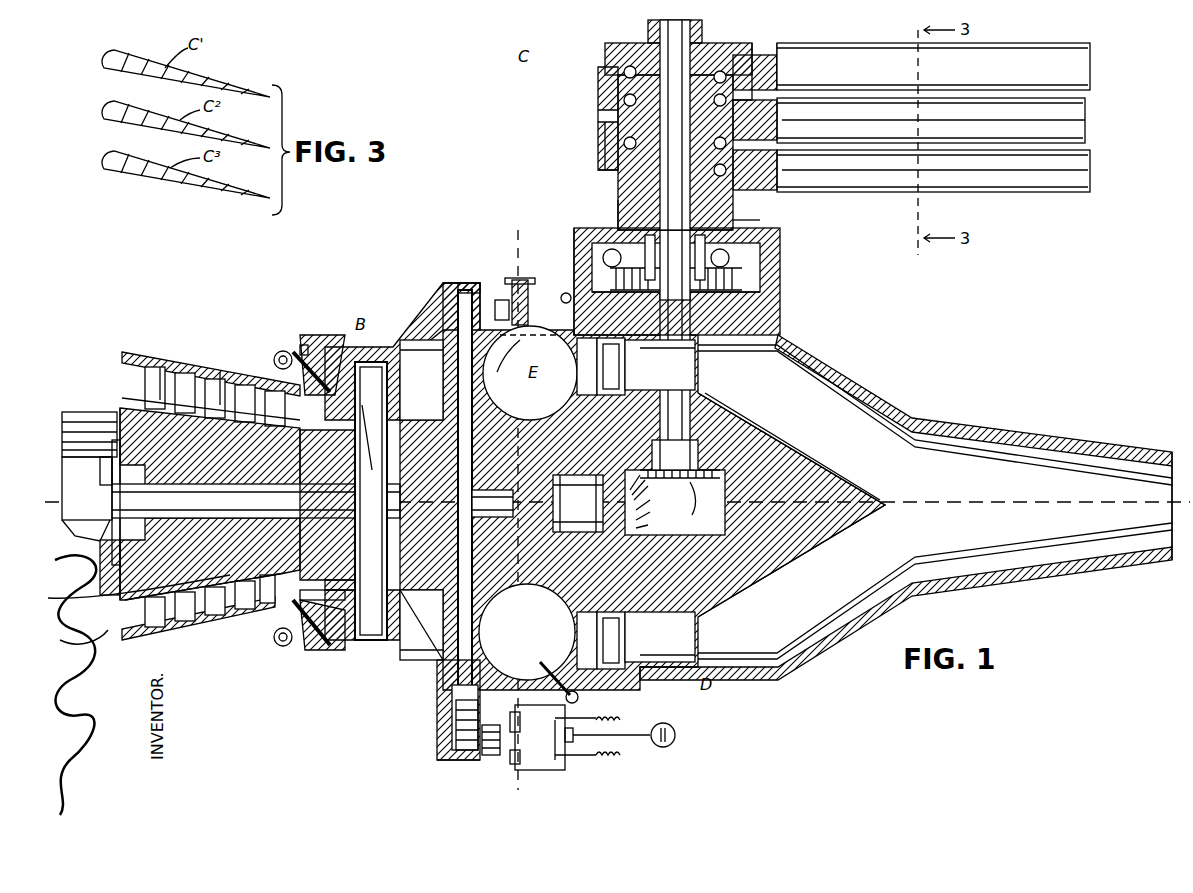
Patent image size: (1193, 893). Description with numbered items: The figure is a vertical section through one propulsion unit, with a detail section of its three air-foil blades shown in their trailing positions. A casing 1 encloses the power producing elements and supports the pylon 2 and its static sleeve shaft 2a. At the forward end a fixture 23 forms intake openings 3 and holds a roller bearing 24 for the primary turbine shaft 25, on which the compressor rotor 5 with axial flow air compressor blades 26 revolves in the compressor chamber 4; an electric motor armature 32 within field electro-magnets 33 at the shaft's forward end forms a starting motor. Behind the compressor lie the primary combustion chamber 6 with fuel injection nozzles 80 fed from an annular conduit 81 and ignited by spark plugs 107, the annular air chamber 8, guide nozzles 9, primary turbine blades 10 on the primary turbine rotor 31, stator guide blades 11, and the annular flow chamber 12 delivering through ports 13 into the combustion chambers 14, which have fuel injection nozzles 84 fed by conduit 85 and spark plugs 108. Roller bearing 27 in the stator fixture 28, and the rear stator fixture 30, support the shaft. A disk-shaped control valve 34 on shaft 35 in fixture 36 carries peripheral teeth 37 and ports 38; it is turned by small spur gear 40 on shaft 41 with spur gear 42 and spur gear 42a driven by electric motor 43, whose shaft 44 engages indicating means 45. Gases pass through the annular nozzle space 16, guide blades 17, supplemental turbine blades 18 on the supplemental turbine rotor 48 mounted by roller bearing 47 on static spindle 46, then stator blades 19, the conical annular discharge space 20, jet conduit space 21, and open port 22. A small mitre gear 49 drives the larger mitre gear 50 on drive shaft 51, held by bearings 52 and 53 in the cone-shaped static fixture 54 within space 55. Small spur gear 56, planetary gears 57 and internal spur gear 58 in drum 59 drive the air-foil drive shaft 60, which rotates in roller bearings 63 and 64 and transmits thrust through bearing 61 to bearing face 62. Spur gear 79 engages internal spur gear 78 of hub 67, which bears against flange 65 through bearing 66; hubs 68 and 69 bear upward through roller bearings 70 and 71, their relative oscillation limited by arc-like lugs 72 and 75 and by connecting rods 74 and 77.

The casing 1 is at (130, 355).
The pylon 2 is at (52, 490).
The sleeve shaft 2a is at (618, 198).
The intake openings 3 is at (120, 350).
The compressor chamber 4 is at (200, 365).
The compressor rotor 5 is at (222, 380).
The primary combustion chamber 6 is at (296, 648).
The annular air chamber 8 is at (330, 625).
The guide nozzles or stator blades 9 is at (370, 640).
The primary turbine blades 10 is at (371, 501).
The stator guide blades 11 is at (422, 500).
The annular flow chamber 12 is at (421, 500).
The ports 13 is at (455, 360).
The combustion chambers 14 is at (528, 503).
The annular nozzle space 16 is at (185, 368).
The guide blades 17 is at (578, 503).
The supplemental turbine blades 18 is at (520, 503).
The reaction guide blades or stator blades 19 is at (640, 640).
The conical annular discharge space 20 is at (906, 507).
The jet conduit space 21 is at (1008, 488).
The open port 22 is at (1172, 512).
The fixture 23 is at (128, 420).
The roller bearing 24 is at (80, 540).
The primary turbine shaft 25 is at (87, 499).
The axial flow air compressor blades 26 is at (160, 365).
The roller bearing 27 is at (260, 595).
The stator fixture 28 is at (338, 360).
The stator fixture 30 is at (430, 675).
The primary turbine rotor 31 is at (370, 429).
The electric motor armature 32 is at (75, 440).
The motor field electro-magnets 33 is at (80, 413).
The disk-shaped control valve 34 is at (450, 285).
The shaft 35 is at (530, 372).
The fixture 36 is at (504, 372).
The teeth forming a spur gear 37 is at (470, 283).
The ports 38 is at (440, 700).
The small spur gear 40 is at (440, 762).
The shaft 41 is at (470, 752).
The spur gear 42 is at (505, 688).
The spur gear 42a is at (537, 737).
The electric motor 43 is at (540, 775).
The shaft 44 is at (578, 760).
The indicating means 45 is at (680, 735).
The static spindle 46 is at (675, 502).
The roller bearing 47 is at (578, 503).
The supplemental turbine rotor 48 is at (621, 370).
The small mitre gear 49 is at (652, 490).
The larger mitre gear 50 is at (693, 504).
The drive shaft 51 is at (670, 400).
The bearing 52 is at (770, 425).
The bearing 53 is at (782, 318).
The static fixture 54 is at (780, 548).
The space 55 is at (790, 460).
The small spur gear 56 is at (580, 245).
The small planetary gears 57 is at (760, 280).
The internal spur gear 58 is at (600, 258).
The drum 59 is at (782, 250).
The air-foil drive shaft 60 is at (745, 208).
The ball or roller bearing 61 is at (630, 268).
The bearing face 62 is at (760, 222).
The roller bearing 63 is at (640, 245).
The roller bearing 64 is at (740, 42).
The flange or drum 65 is at (777, 45).
The ball or roller bearing 66 is at (615, 48).
The hub 67 is at (780, 62).
The hub 68 is at (780, 125).
The hub 69 is at (780, 177).
The roller bearing 70 is at (598, 92).
The roller bearing 71 is at (605, 128).
The arc-like lug 72 is at (597, 118).
The connecting rod 74 is at (810, 136).
The arc-like lug 75 is at (597, 170).
The connecting rod 77 is at (790, 190).
The internal spur gear 78 is at (652, 40).
The spur gear 79 is at (700, 40).
The fuel injection nozzles 80 is at (295, 355).
The annular conduit 81 is at (268, 665).
The fuel injection nozzles 84 is at (565, 295).
The conduit 85 is at (580, 697).
The spark plugs 107 is at (306, 348).
The spark plugs 108 is at (489, 291).